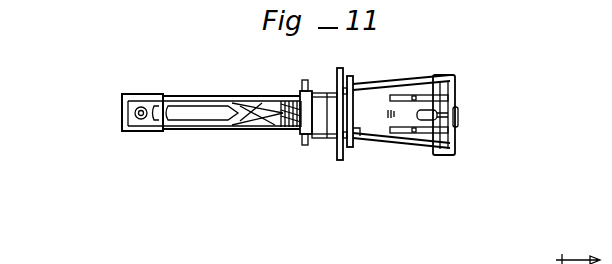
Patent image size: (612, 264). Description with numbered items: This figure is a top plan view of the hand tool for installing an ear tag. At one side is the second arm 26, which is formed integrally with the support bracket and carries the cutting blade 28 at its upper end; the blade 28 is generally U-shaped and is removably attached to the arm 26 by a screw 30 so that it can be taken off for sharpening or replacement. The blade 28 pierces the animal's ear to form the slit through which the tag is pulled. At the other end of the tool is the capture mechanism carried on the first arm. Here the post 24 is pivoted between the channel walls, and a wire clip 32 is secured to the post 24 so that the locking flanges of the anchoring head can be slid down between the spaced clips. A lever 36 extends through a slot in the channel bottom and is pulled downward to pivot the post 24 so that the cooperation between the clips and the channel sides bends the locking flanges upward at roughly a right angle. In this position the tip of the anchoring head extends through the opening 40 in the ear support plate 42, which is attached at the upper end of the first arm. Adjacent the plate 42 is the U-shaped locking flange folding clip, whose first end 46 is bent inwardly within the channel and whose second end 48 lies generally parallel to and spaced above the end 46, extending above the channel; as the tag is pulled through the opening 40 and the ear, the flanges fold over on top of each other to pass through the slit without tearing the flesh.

The post 24 is at (448, 118).
The second arm 26 is at (150, 131).
The cutting blade 28 is at (247, 114).
The screw 30 is at (135, 113).
The wire clip 32 is at (423, 88).
The lever 36 is at (457, 102).
The opening 40 is at (337, 135).
The ear support plate 42 is at (340, 78).
The first end 46 is at (366, 128).
The second end 48 is at (349, 92).